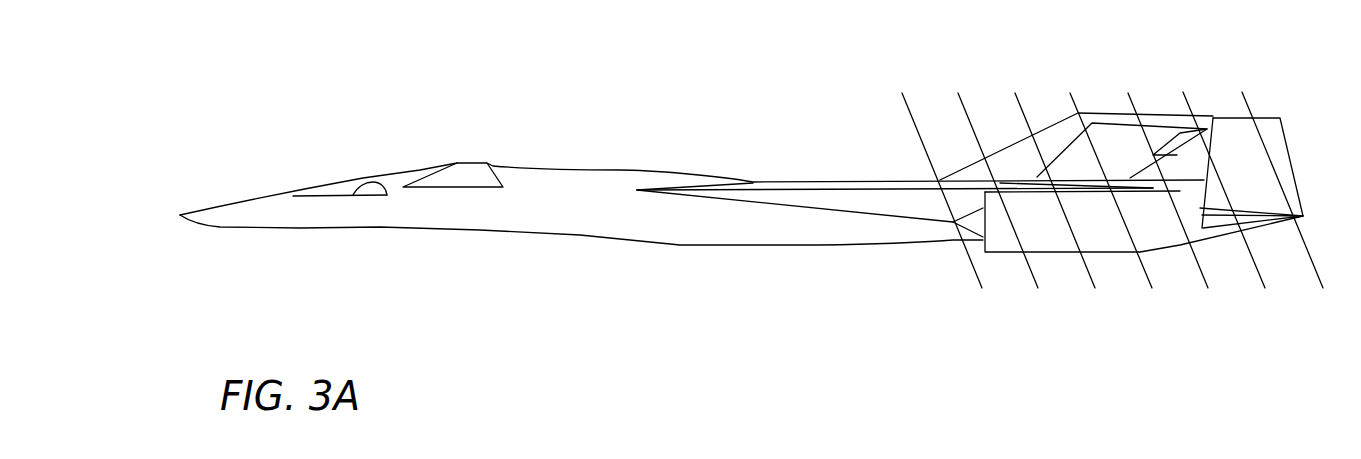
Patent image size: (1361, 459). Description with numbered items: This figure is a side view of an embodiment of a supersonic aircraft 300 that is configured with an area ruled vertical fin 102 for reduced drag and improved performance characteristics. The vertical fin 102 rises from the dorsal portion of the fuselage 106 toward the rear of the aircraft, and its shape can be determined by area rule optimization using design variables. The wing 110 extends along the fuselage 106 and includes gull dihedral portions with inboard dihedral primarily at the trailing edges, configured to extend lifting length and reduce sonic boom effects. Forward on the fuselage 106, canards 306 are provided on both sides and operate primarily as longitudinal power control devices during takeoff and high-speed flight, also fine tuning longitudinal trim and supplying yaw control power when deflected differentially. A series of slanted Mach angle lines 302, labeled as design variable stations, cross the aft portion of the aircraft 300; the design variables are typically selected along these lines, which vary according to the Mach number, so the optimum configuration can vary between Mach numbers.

The aircraft 300 is at (428, 64).
The Mach angle lines 302 is at (958, 93).
The vertical fin 102 is at (1200, 115).
The fuselage 106 is at (600, 167).
The wing 110 is at (913, 183).
The canards 306 is at (477, 163).